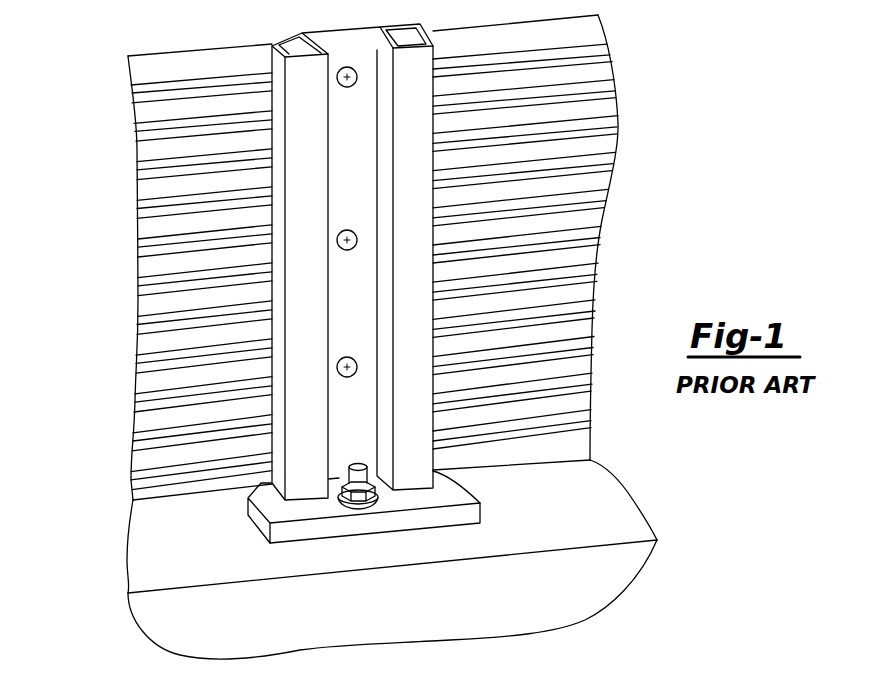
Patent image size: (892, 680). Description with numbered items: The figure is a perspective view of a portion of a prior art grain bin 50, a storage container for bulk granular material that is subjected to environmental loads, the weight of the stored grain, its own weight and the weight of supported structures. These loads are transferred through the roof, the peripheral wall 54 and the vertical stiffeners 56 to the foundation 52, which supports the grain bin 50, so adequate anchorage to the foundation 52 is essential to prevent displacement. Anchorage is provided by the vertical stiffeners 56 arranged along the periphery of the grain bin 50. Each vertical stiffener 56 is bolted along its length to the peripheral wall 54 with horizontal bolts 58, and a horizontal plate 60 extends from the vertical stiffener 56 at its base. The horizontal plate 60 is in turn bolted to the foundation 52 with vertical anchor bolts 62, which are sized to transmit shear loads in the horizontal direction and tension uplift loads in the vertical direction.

The grain bin 50 is at (78, 306).
The foundation 52 is at (607, 513).
The peripheral wall 54 is at (162, 145).
The vertical stiffener 56 is at (297, 73).
The horizontal bolts 58 is at (348, 86).
The horizontal plate 60 is at (447, 497).
The vertical anchor bolts 62 is at (357, 500).